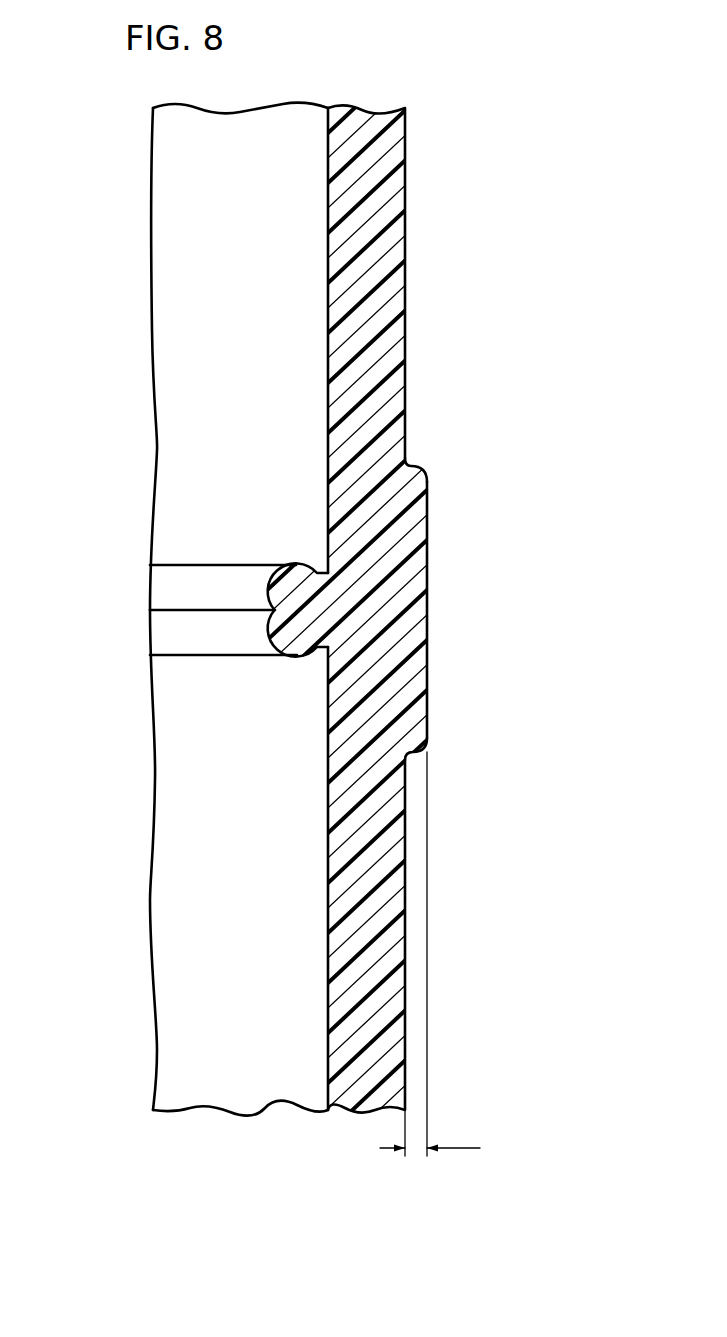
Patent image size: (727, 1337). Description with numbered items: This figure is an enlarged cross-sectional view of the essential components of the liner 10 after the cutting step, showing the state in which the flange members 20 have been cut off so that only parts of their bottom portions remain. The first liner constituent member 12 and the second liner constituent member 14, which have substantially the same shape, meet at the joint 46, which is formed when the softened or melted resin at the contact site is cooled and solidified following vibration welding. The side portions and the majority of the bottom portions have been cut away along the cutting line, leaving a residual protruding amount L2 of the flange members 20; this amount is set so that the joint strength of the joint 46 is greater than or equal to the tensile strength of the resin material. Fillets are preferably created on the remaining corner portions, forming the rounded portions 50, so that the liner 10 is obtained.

The liner for a high pressure tank 10 is at (391, 651).
The first liner constituent member 12 is at (178, 828).
The second liner constituent member 14 is at (178, 391).
The flange member 20 is at (474, 610).
The joint 46 is at (294, 583).
The rounded portion 50 is at (427, 470).
The residual protruding amount L2 is at (430, 954).